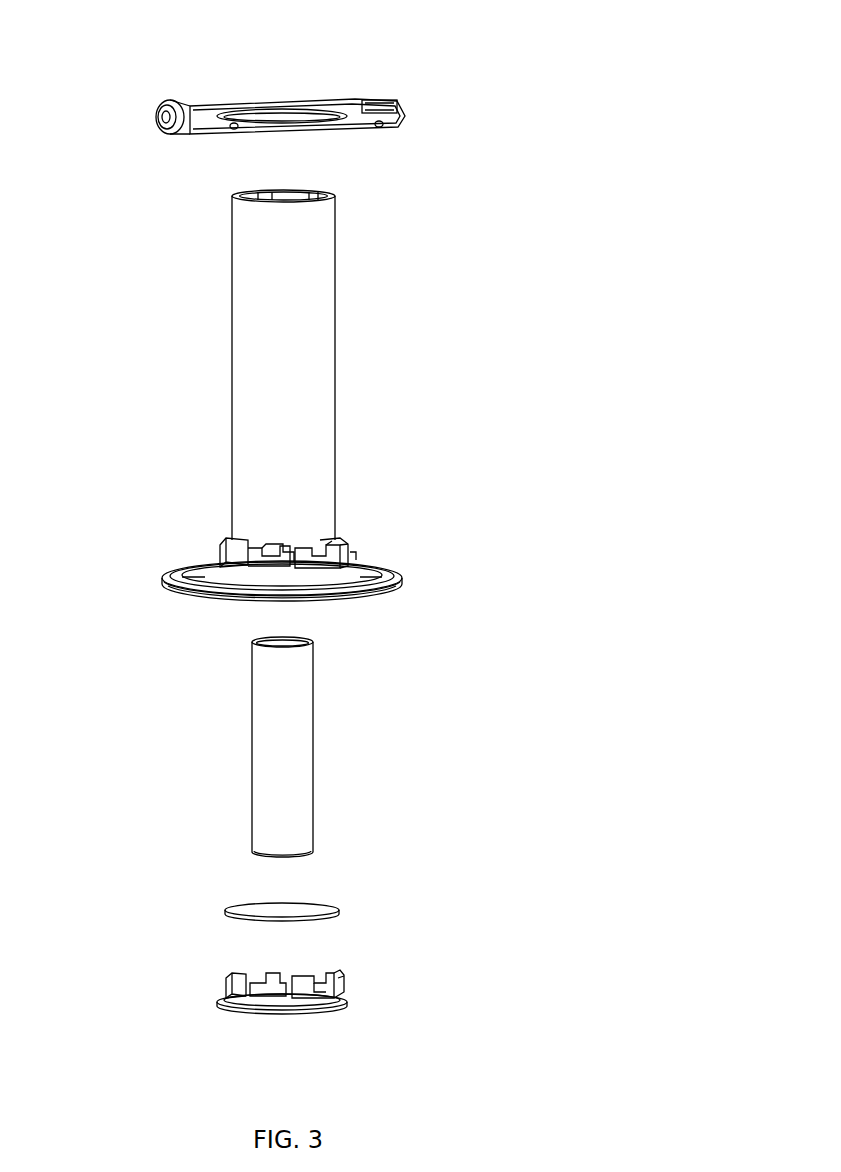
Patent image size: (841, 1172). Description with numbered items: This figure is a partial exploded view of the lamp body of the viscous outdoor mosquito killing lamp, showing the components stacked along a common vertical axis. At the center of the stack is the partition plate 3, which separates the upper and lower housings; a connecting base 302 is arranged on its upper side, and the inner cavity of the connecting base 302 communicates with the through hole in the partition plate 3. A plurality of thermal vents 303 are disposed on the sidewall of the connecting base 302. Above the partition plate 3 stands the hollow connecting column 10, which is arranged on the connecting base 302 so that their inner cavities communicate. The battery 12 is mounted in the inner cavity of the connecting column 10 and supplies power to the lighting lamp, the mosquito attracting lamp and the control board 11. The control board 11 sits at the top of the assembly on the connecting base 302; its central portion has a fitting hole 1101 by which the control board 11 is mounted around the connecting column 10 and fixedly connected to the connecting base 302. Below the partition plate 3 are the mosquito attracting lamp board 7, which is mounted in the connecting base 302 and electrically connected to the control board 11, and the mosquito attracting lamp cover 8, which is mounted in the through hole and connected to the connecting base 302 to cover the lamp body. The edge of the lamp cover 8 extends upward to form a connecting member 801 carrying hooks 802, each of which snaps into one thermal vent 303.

The control board 11 is at (352, 103).
The fitting hole 1101 is at (277, 117).
The connecting column 10 is at (322, 365).
The partition plate 3 is at (380, 592).
The connecting base 302 is at (230, 552).
The thermal vents 303 is at (337, 537).
The battery 12 is at (302, 772).
The mosquito attracting lamp board 7 is at (253, 908).
The mosquito attracting lamp cover 8 is at (333, 1007).
The connecting member 801 is at (334, 981).
The hooks 802 is at (340, 976).